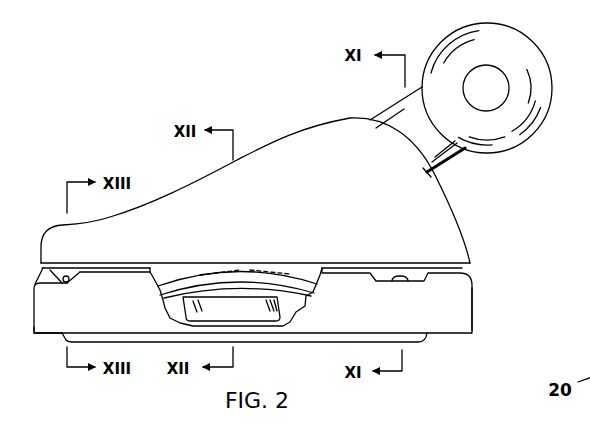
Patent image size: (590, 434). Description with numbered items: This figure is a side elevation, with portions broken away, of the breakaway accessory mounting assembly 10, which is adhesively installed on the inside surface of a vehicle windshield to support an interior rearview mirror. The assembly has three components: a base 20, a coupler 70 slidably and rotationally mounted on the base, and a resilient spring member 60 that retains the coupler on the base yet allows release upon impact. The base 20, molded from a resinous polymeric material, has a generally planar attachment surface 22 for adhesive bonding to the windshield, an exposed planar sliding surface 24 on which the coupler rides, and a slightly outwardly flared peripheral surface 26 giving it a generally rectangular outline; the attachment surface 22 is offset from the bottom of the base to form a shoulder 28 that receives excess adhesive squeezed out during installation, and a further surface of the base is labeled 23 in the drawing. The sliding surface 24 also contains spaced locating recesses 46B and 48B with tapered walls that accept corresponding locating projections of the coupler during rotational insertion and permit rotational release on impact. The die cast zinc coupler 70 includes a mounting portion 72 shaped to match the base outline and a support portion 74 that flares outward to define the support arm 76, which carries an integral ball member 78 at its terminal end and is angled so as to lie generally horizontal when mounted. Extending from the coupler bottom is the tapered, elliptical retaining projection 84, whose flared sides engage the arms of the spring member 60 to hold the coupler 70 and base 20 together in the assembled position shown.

The breakaway accessory mounting assembly 10 is at (249, 88).
The base 20 is at (471, 281).
The attachment surface 22 is at (417, 343).
The side wall 23 is at (473, 300).
The sliding surface 24 is at (353, 266).
The peripheral surface 26 is at (353, 316).
The shoulder 28 is at (45, 334).
The locating recess 46B is at (412, 283).
The locating recess 48B is at (73, 282).
The spring member 60 is at (292, 271).
The coupler 70 is at (269, 139).
The mounting portion 72 is at (102, 253).
The support portion 74 is at (313, 179).
The support arm 76 is at (430, 163).
The ball member 78 is at (535, 73).
The retaining projection 84 is at (246, 298).